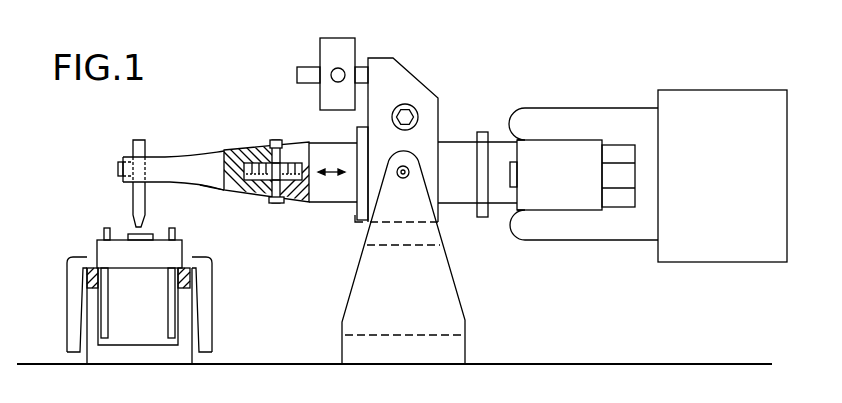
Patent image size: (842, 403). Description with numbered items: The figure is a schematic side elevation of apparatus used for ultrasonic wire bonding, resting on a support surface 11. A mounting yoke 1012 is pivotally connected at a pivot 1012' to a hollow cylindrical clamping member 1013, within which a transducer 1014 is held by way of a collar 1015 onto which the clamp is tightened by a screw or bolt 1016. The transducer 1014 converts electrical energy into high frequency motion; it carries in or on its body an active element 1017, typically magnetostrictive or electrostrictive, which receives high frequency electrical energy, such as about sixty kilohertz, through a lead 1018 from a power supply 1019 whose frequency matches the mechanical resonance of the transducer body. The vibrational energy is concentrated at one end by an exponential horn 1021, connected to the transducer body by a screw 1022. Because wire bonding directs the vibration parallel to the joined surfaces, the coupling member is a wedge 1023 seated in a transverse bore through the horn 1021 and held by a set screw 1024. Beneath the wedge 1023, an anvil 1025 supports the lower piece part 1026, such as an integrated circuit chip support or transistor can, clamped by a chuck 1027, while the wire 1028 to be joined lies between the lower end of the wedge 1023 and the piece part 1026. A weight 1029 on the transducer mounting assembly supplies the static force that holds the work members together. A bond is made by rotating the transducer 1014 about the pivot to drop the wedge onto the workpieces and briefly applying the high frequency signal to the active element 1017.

The support surface 11 is at (594, 364).
The mounting yoke 1012 is at (436, 257).
The pivot 1012' is at (449, 137).
The hollow cylindrical clamping member 1013 is at (405, 77).
The transducer 1014 is at (219, 157).
The collar 1015 is at (360, 221).
The screw or bolt 1016 is at (418, 108).
The active element 1017 is at (577, 140).
The lead 1018 is at (593, 241).
The power supply 1019 is at (708, 90).
The exponential horn 1021 is at (210, 187).
The screw 1022 is at (255, 148).
The wedge 1023 is at (133, 145).
The set screw 1024 is at (119, 170).
The anvil 1025 is at (183, 344).
The lower piece part 1026 is at (103, 246).
The chuck 1027 is at (205, 291).
The wire 1028 is at (192, 222).
The weight 1029 is at (322, 47).